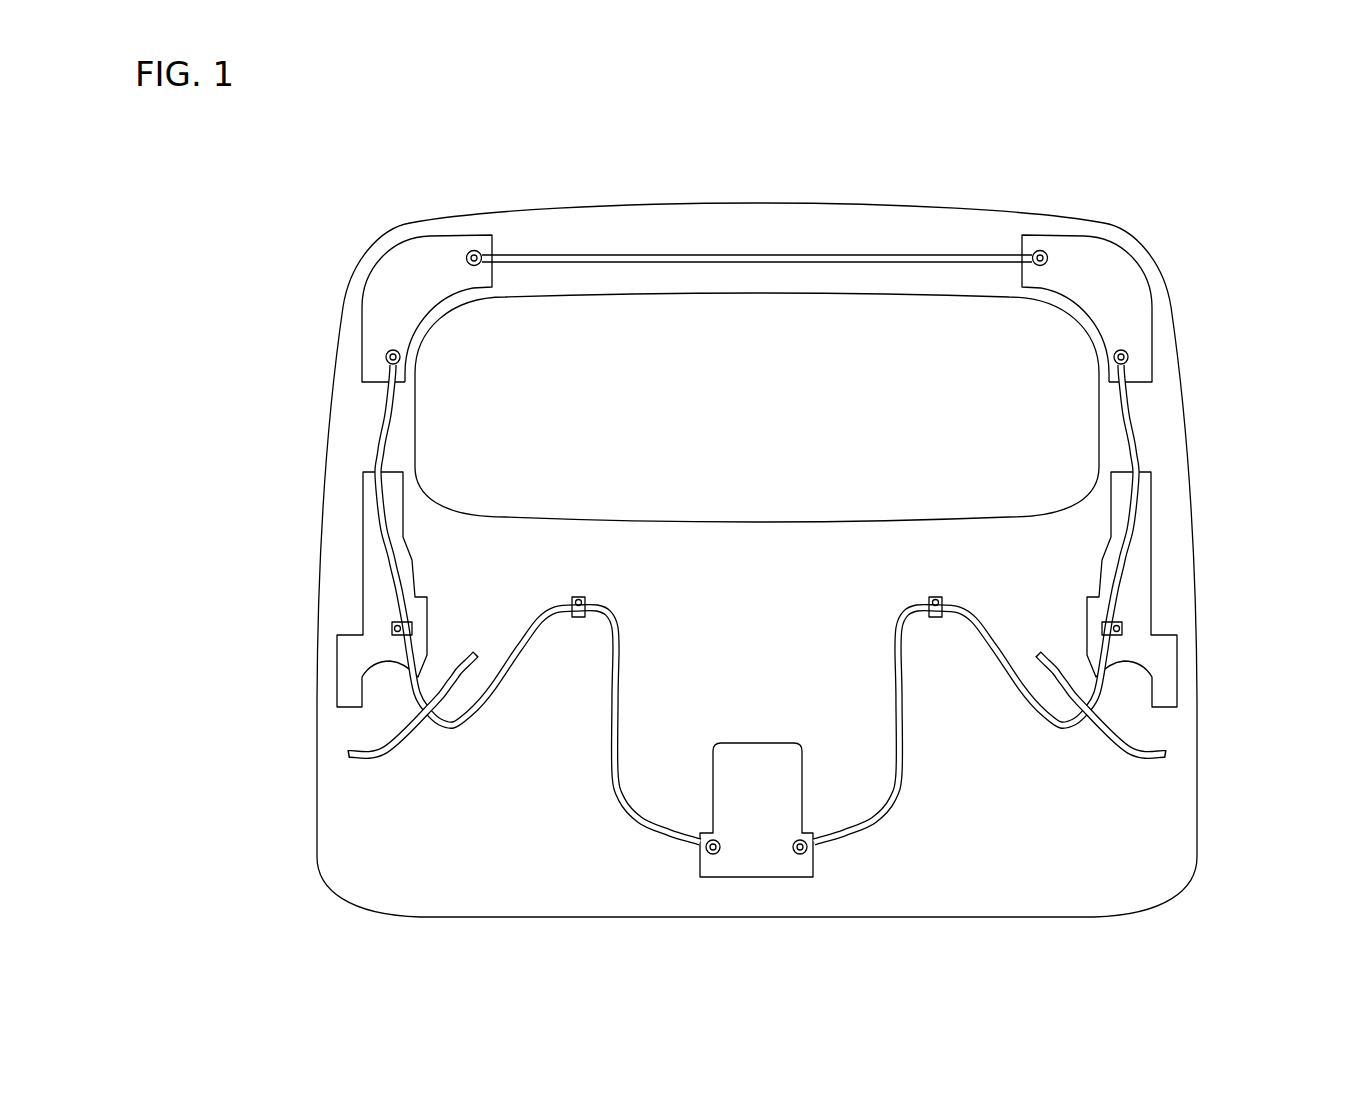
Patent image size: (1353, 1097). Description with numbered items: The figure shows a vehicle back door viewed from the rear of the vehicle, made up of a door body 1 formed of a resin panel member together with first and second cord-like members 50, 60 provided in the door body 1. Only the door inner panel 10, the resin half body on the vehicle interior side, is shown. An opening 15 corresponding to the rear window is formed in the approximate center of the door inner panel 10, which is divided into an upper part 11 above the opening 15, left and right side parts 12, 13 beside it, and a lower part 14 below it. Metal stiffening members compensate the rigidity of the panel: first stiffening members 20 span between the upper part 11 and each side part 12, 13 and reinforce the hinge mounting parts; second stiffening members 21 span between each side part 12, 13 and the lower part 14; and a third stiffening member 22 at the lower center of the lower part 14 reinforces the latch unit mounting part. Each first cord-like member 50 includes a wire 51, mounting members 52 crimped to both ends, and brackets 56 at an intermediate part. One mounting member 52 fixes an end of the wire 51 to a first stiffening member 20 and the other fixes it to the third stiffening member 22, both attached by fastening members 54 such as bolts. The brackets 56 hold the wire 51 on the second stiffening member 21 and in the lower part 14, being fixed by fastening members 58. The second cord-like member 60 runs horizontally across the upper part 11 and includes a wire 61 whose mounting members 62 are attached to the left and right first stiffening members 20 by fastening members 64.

The door body 1 is at (734, 105).
The door inner panel 10 is at (690, 560).
The upper part 11 is at (782, 189).
The side part 12 is at (298, 425).
The side part 13 is at (1214, 432).
The lower part 14 is at (553, 878).
The opening 15 is at (757, 407).
The first stiffening member 20 is at (757, 309).
The second stiffening member 21 is at (755, 589).
The third stiffening member 22 is at (770, 861).
The first cord-like member 50 is at (745, 603).
The wire 51 is at (640, 895).
The mounting member 52 is at (562, 586).
The fastening member 54 is at (698, 661).
The bracket 56 is at (417, 930).
The fastening member 58 is at (698, 559).
The second cord-like member 60 is at (757, 317).
The wire 61 is at (882, 207).
The mounting member 62 is at (757, 218).
The fastening member 64 is at (757, 307).